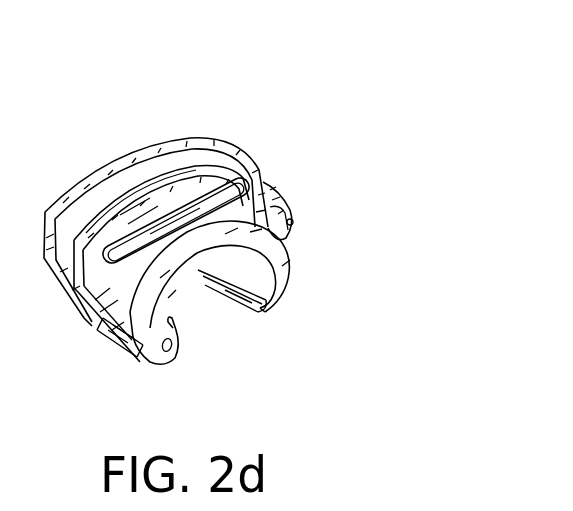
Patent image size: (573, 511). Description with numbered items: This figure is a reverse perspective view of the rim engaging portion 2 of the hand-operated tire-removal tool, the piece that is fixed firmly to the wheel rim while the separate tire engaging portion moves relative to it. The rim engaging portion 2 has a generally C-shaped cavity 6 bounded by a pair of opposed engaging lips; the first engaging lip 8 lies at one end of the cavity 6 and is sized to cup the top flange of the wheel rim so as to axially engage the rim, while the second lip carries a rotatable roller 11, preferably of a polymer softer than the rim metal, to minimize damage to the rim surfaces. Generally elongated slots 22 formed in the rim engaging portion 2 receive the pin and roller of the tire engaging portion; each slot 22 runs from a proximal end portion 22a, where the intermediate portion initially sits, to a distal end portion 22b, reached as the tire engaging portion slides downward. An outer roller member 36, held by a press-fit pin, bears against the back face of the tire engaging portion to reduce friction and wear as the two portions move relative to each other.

The rim engaging portion 2 is at (328, 250).
The C-shaped cavity 6 is at (198, 289).
The first engaging lip 8 is at (246, 312).
The rotatable roller 11 is at (110, 347).
The slot 22 is at (73, 230).
The proximal end portion of slot 22a is at (118, 246).
The distal end portion of slot 22b is at (238, 186).
The outer roller member 36 is at (276, 188).